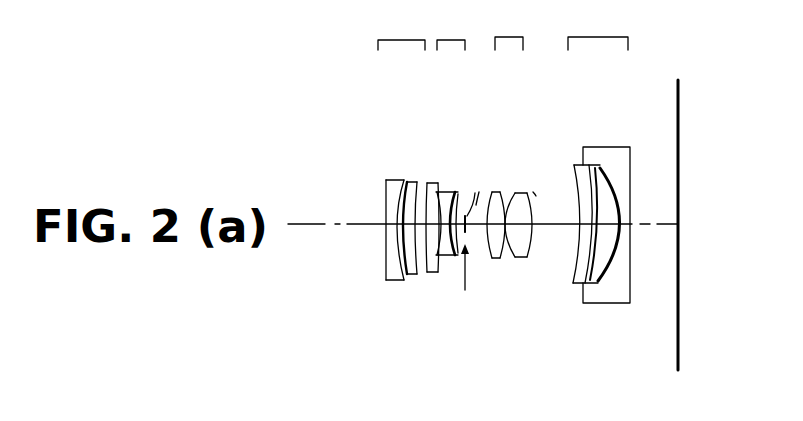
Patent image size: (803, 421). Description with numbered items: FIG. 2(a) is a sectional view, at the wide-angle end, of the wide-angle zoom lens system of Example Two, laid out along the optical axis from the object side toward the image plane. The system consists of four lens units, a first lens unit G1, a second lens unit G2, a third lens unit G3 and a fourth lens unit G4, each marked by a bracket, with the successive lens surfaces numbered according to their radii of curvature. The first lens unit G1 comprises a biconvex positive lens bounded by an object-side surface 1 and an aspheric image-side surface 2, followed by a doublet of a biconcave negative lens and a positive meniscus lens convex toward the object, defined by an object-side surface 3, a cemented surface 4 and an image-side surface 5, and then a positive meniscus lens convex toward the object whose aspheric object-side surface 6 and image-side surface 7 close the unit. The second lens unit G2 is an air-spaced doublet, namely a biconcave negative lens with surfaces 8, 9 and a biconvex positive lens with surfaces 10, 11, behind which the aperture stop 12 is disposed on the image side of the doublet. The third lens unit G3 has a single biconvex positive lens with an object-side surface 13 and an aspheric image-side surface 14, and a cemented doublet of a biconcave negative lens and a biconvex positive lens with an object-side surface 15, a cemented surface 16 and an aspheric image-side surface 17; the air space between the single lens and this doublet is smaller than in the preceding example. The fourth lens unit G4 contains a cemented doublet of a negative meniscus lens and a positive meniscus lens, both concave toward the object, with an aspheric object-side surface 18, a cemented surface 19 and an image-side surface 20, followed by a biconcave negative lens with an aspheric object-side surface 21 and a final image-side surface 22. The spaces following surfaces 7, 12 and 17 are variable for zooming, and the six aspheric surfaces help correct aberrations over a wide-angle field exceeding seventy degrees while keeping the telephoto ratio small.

The object-side surface of biconvex positive lens of first lens unit 1 is at (386, 189).
The image-side surface of biconvex positive lens of first lens unit 2 is at (398, 178).
The object-side surface of biconcave negative lens of first-unit doublet 3 is at (404, 176).
The cemented surface of first-unit doublet 4 is at (412, 178).
The image-side surface of positive meniscus lens of first-unit doublet 5 is at (424, 180).
The object-side surface of image-side positive meniscus lens of first lens unit 6 is at (434, 180).
The image-side surface of image-side positive meniscus lens of first lens unit 7 is at (436, 190).
The object-side surface of biconcave negative lens of second lens unit 8 is at (446, 190).
The image-side surface of biconcave negative lens of second lens unit 9 is at (456, 192).
The object-side surface of biconvex positive lens of second lens unit 10 is at (464, 183).
The image-side surface of biconvex positive lens of second lens unit 11 is at (479, 192).
The aperture stop 12 is at (475, 193).
The object-side surface of biconvex positive lens of third lens unit 13 is at (492, 190).
The image-side surface of biconvex positive lens of third lens unit 14 is at (503, 190).
The object-side surface of biconcave negative lens of third-unit cemented doublet 15 is at (512, 191).
The cemented surface of third-unit doublet 16 is at (522, 192).
The image-side surface of third-unit cemented doublet 17 is at (533, 192).
The object-side surface of fourth-unit cemented doublet 18 is at (572, 165).
The cemented surface of fourth-unit doublet 19 is at (584, 166).
The image-side surface of positive meniscus lens of fourth lens unit 20 is at (594, 168).
The object-side surface of biconcave negative lens of fourth lens unit 21 is at (605, 162).
The image-side surface of biconcave negative lens of fourth lens unit 22 is at (630, 176).
The first lens unit G1 is at (401, 27).
The second lens unit G2 is at (446, 27).
The third lens unit G3 is at (506, 27).
The fourth lens unit G4 is at (598, 27).